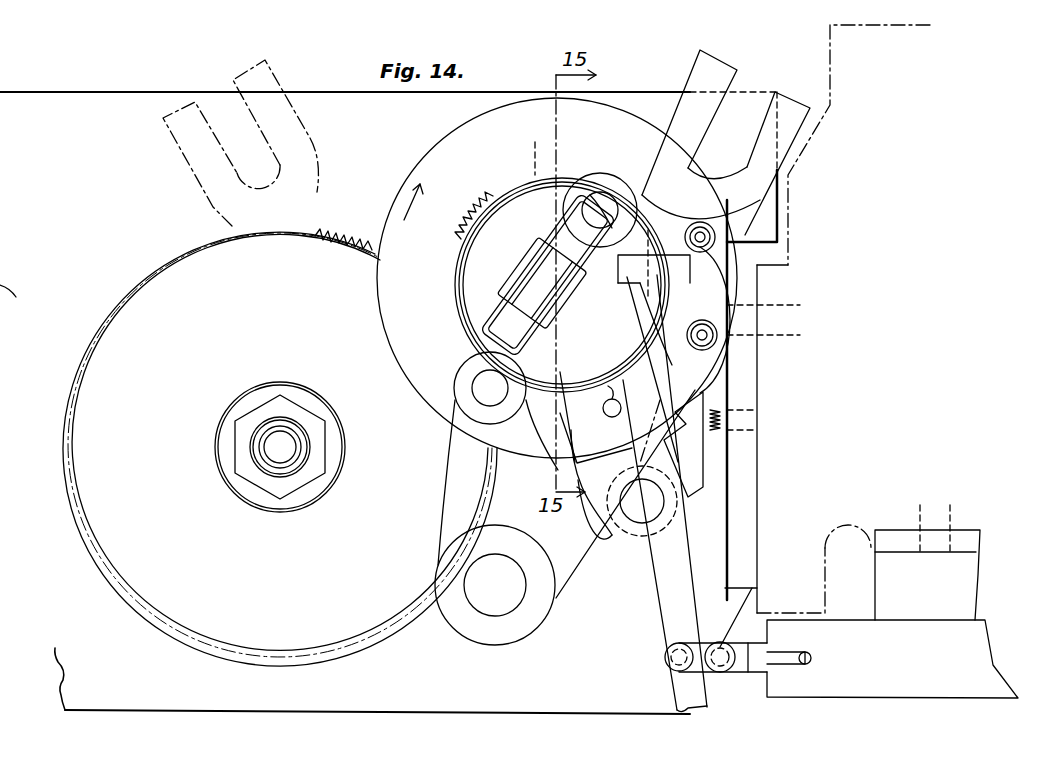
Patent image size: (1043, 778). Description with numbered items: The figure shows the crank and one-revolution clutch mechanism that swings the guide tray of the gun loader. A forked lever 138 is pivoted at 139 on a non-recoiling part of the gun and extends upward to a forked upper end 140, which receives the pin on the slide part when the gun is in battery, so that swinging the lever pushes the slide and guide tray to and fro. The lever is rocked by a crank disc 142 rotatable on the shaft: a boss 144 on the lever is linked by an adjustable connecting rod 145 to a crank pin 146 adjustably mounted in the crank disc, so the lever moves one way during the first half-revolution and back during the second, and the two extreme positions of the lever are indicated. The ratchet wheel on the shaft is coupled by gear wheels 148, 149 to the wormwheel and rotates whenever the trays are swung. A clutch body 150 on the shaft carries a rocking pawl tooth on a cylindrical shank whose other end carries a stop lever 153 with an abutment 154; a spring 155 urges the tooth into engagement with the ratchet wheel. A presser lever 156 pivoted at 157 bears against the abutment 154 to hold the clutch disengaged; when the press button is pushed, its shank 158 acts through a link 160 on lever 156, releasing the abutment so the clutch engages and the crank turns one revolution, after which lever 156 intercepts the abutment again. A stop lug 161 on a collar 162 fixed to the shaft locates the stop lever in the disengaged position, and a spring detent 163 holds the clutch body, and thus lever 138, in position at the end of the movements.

The forked lever 138 is at (557, 556).
The pivot 139 is at (495, 588).
The forked upper end 140 is at (737, 78).
The crank disc 142 is at (482, 250).
The boss 144 is at (466, 382).
The connecting rod 145 is at (533, 256).
The crank pin 146 is at (595, 200).
The gear wheel 148 is at (318, 233).
The gear wheel 149 is at (522, 144).
The clutch body 150 is at (462, 134).
The stop lever 153 is at (708, 226).
The abutment 154 is at (661, 240).
The spring 155 is at (596, 462).
The presser lever 156 is at (655, 598).
The pivot 157 is at (645, 508).
The shank 158 is at (757, 674).
The link 160 is at (693, 665).
The stop lug 161 is at (606, 205).
The collar 162 is at (560, 425).
The spring detent 163 is at (735, 452).